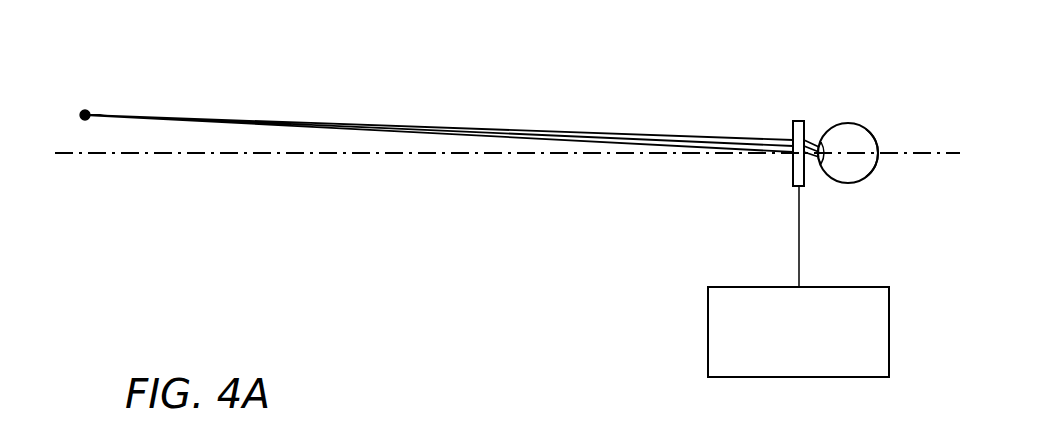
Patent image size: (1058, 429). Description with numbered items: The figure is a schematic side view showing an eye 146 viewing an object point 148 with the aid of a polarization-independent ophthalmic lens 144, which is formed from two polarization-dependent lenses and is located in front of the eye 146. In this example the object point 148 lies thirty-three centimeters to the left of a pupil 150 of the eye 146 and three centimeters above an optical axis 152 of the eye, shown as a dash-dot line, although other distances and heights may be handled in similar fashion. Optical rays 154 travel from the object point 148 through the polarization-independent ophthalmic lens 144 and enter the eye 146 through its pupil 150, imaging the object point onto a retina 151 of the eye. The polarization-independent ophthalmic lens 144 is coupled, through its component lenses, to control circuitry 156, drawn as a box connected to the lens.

The polarization-independent ophthalmic lens 144 is at (807, 121).
The eye 146 is at (858, 148).
The object point 148 is at (85, 110).
The pupil 150 is at (837, 137).
The retina 151 is at (880, 154).
The optical axis 152 is at (465, 153).
The optical rays 154 is at (743, 147).
The control circuitry 156 is at (708, 330).